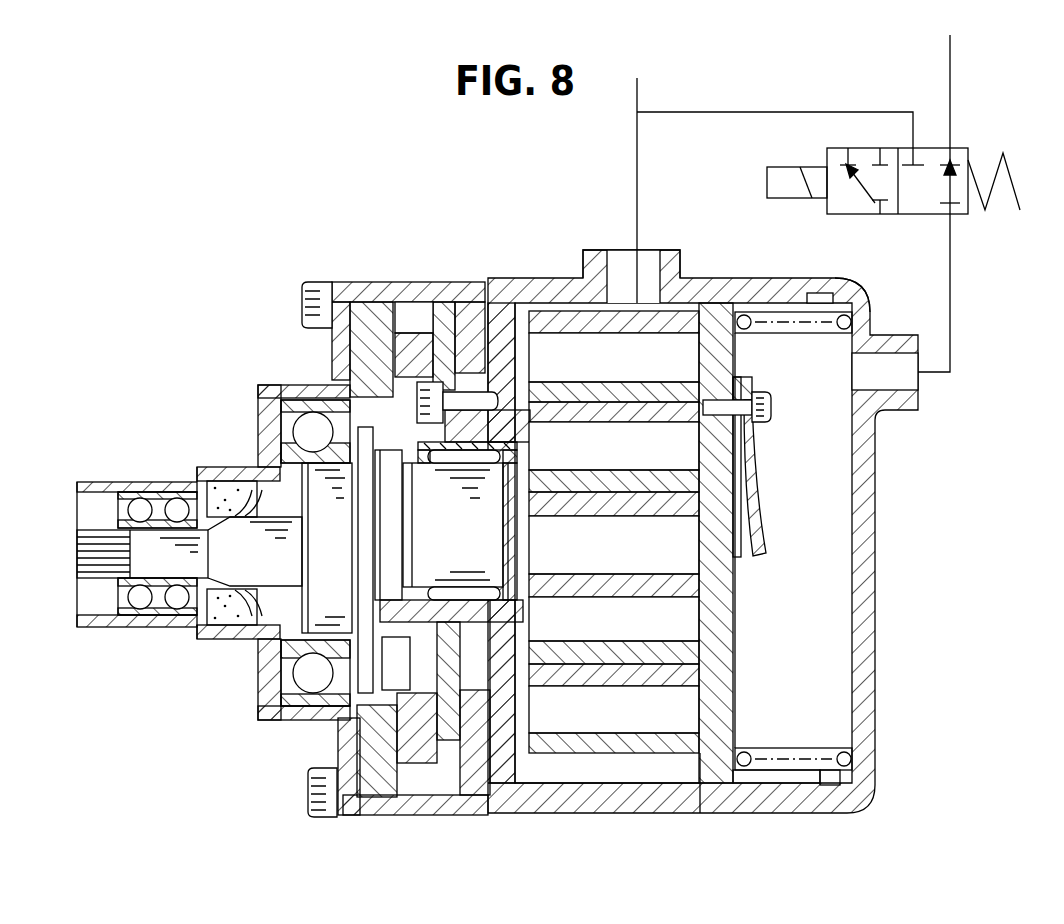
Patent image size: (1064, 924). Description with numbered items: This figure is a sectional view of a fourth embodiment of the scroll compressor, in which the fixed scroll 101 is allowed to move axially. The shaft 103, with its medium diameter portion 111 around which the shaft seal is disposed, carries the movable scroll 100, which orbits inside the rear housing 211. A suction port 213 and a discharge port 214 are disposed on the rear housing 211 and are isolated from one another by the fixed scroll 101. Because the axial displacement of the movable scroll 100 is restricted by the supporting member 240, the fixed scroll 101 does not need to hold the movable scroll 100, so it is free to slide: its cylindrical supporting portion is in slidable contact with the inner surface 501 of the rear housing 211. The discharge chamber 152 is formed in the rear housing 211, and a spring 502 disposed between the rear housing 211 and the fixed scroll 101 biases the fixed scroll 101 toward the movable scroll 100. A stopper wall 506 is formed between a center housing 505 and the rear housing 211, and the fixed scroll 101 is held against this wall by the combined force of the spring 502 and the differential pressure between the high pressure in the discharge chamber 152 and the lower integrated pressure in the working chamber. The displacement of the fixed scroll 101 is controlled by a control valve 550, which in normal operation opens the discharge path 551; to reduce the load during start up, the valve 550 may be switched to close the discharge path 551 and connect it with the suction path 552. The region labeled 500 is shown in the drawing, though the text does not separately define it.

The movable scroll 100 is at (555, 318).
The fixed scroll 101 is at (640, 385).
The shaft 103 is at (245, 553).
The medium diameter portion 111 is at (437, 553).
The discharge chamber 152 is at (817, 500).
The rear housing 211 is at (868, 617).
The suction port 213 is at (623, 272).
The discharge port 214 is at (902, 373).
The supporting member 240 is at (453, 258).
The pressure chamber housing 500 is at (845, 272).
The inner surface 501 is at (840, 781).
The spring 502 is at (792, 756).
The center housing 505 is at (568, 793).
The stopper wall 506 is at (700, 813).
The control valve 550 is at (932, 148).
The discharge path 551 is at (952, 292).
The suction path 552 is at (638, 100).